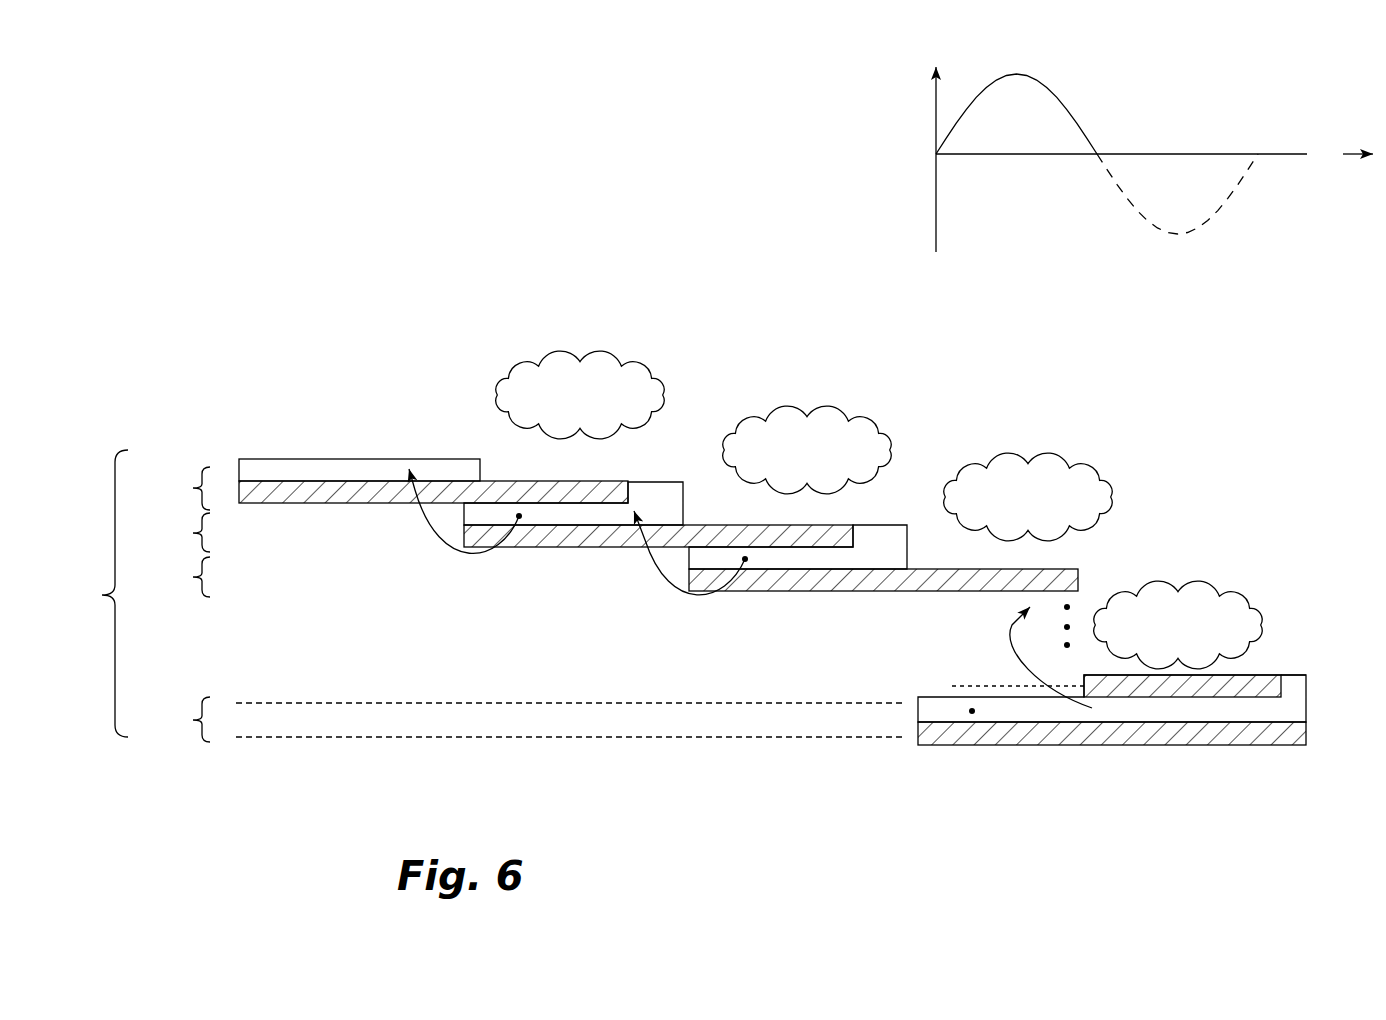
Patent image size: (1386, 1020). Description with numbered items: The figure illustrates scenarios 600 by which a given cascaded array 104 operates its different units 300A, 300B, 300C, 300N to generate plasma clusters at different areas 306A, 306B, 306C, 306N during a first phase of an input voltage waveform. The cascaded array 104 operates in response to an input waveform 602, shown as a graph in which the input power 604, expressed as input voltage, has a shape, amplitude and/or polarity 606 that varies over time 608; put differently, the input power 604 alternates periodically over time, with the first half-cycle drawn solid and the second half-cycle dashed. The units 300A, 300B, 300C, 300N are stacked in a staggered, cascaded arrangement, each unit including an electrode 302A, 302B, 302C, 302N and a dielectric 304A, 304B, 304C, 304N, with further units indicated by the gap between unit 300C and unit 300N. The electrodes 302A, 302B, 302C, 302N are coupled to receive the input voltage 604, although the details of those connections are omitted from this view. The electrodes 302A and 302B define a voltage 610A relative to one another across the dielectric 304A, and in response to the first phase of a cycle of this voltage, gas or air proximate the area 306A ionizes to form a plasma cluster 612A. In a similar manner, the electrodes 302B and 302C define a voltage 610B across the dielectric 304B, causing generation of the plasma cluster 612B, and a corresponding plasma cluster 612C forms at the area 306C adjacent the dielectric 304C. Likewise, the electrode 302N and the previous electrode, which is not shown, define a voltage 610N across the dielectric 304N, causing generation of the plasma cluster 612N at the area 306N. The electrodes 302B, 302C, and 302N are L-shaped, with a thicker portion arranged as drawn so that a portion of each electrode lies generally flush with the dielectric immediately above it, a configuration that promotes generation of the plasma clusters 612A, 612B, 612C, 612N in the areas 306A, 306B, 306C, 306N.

The scenarios 600 is at (345, 174).
The input waveform 602 is at (1147, 156).
The input power 604 is at (999, 85).
The polarity 606 is at (959, 234).
The time 608 is at (1344, 188).
The cascaded array 104 is at (57, 607).
The unit 300A is at (134, 502).
The unit 300B is at (134, 547).
The unit 300C is at (134, 589).
The unit 300N is at (134, 732).
The electrode 302A is at (280, 459).
The electrode 302B is at (663, 481).
The electrode 302C is at (885, 525).
The electrode 302N is at (1307, 675).
The dielectric 304A is at (260, 503).
The dielectric 304B is at (530, 548).
The dielectric 304C is at (798, 590).
The dielectric 304N is at (1120, 698).
The area 306A is at (607, 462).
The area 306B is at (858, 505).
The area 306C is at (1066, 555).
The area 306N is at (1192, 665).
The voltage 610A is at (441, 594).
The voltage 610B is at (608, 594).
The voltage 610N is at (949, 662).
The plasma cluster 612A is at (554, 410).
The plasma cluster 612B is at (781, 465).
The plasma cluster 612C is at (1002, 512).
The plasma cluster 612N is at (1152, 640).